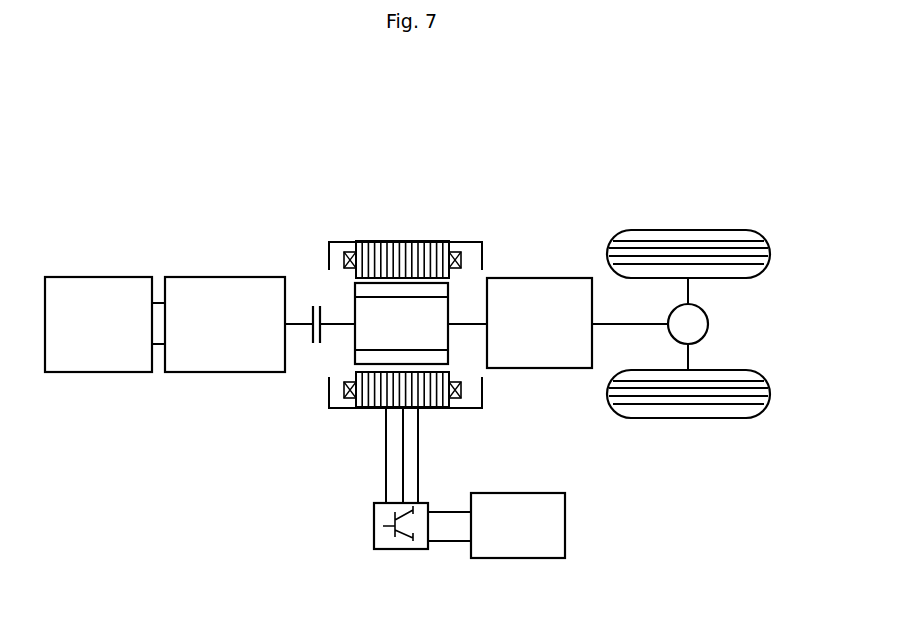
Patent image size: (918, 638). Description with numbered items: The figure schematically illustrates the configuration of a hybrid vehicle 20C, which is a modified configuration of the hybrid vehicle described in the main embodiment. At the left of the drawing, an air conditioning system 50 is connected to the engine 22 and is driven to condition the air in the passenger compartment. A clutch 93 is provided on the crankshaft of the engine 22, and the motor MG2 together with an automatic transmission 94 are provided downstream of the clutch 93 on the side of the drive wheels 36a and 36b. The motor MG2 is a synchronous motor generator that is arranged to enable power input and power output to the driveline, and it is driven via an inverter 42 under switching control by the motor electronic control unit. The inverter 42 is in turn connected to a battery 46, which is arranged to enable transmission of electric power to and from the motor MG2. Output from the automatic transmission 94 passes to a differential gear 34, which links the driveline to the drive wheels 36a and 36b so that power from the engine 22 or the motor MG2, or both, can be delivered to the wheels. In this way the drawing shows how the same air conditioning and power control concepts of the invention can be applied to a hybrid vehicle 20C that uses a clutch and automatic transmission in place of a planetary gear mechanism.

The hybrid vehicle 20C is at (421, 160).
The air conditioning system 50 is at (97, 277).
The engine 22 is at (224, 277).
The clutch 93 is at (317, 305).
The motor MG2 is at (403, 240).
The automatic transmission 94 is at (540, 278).
The differential gear 34 is at (706, 310).
The drive wheel 36a is at (688, 230).
The drive wheel 36b is at (713, 370).
The inverter 42 is at (374, 528).
The battery 46 is at (565, 528).